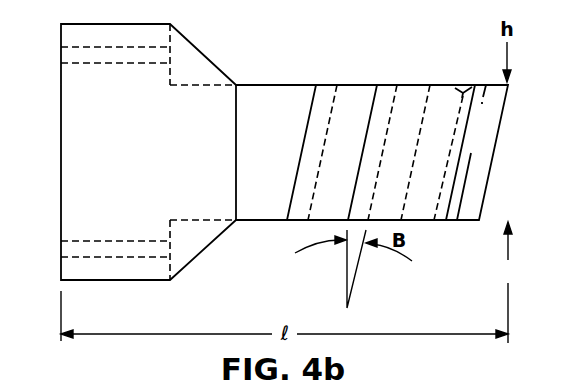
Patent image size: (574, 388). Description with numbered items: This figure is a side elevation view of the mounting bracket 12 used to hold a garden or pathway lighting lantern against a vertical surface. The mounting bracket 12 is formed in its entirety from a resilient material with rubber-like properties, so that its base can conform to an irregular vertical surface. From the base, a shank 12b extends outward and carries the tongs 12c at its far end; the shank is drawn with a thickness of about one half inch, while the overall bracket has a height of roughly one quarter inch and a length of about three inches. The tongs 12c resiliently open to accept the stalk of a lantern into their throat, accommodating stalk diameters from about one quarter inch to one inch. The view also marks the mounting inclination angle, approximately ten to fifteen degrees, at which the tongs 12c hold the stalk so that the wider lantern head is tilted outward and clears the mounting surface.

The mounting bracket 12 is at (125, 291).
The shank 12b is at (274, 64).
The tongs 12c is at (389, 64).